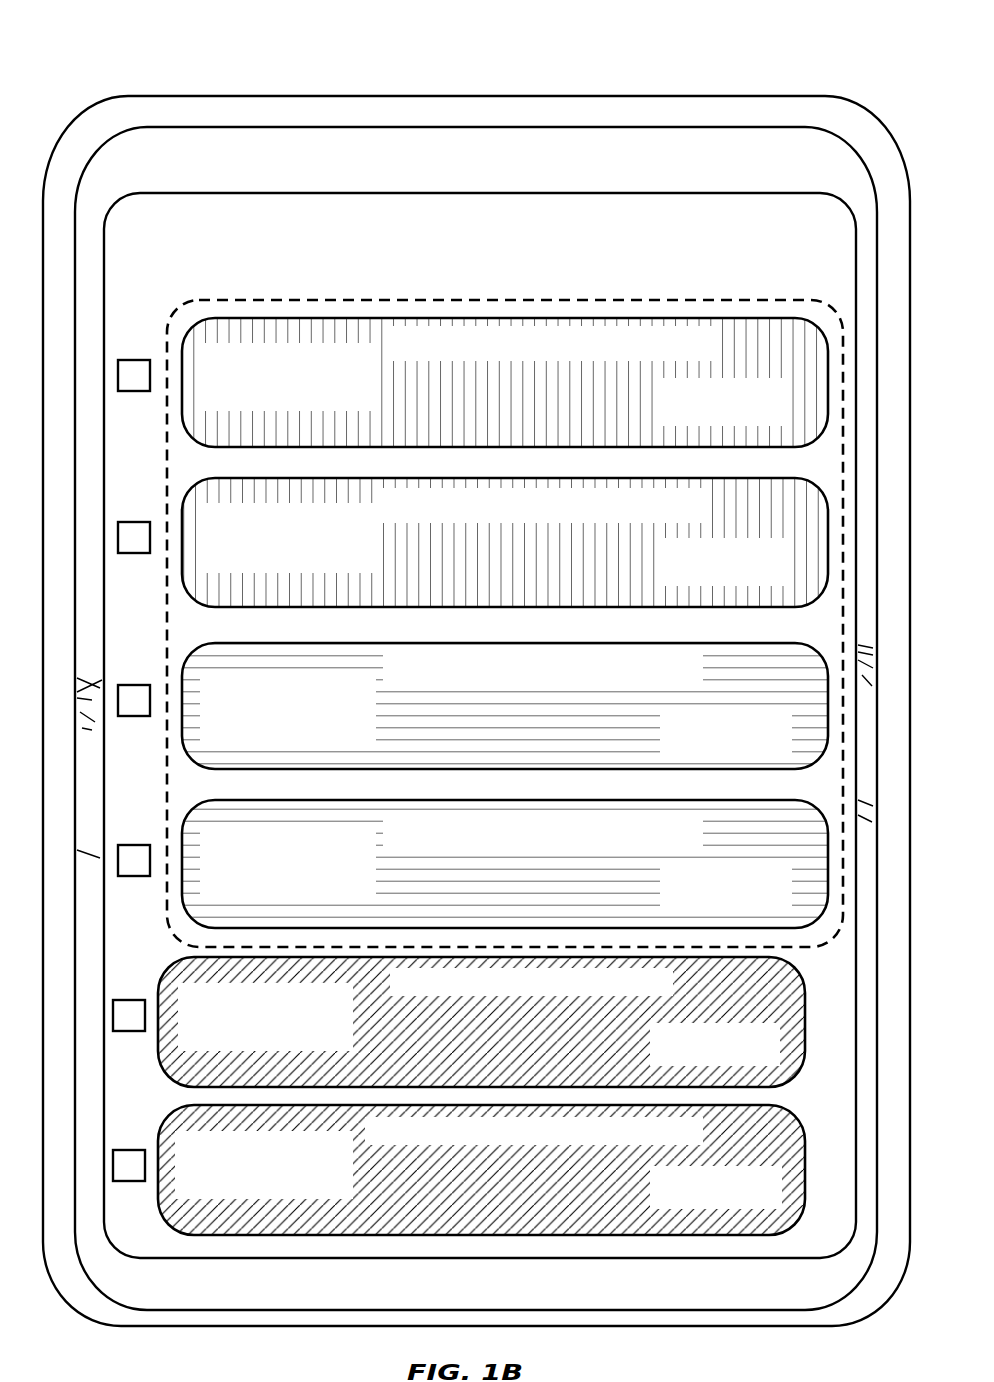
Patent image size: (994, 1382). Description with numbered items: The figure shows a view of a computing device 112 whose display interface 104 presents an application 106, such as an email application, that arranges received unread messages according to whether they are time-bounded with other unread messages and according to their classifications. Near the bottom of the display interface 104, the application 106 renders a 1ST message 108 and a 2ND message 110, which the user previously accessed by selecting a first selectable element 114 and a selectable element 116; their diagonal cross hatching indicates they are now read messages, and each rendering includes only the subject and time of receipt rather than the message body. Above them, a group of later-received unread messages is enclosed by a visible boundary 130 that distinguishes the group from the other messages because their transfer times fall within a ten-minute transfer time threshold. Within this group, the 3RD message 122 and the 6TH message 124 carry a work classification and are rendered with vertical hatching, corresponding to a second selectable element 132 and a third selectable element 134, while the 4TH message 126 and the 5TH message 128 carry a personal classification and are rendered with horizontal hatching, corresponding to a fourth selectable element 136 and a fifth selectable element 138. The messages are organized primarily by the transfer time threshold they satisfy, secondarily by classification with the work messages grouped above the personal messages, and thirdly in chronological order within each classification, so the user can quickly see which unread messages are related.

The 3RD message 122 is at (800, 66).
The computing device 112 is at (320, 129).
The display interface 104 is at (729, 172).
The application 106 is at (494, 269).
The visible boundary 130 is at (218, 300).
The 6TH message 124 is at (511, 529).
The 4TH message 126 is at (505, 721).
The 5TH message 128 is at (505, 852).
The 1ST message 108 is at (501, 1015).
The 2ND message 110 is at (499, 1155).
The second selectable element 132 is at (748, 448).
The third selectable element 134 is at (775, 479).
The fourth selectable element 136 is at (718, 777).
The fifth selectable element 138 is at (743, 799).
The first selectable element 114 is at (806, 996).
The selectable element 116 is at (803, 1116).